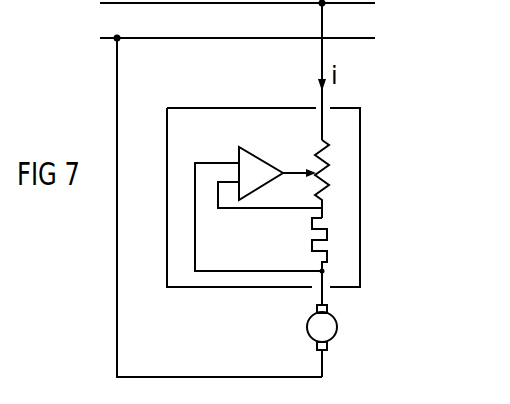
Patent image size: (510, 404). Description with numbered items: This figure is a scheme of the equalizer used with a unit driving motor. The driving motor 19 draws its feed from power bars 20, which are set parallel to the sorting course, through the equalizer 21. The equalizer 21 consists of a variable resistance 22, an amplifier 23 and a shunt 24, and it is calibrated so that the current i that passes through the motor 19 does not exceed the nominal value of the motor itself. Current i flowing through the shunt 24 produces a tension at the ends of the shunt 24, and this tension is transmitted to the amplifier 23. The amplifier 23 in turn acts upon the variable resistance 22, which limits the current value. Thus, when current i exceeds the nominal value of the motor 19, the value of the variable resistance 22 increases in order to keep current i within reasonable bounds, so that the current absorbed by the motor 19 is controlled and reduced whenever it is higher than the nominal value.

The driving motor 19 is at (337, 326).
The power bars 20 is at (377, 4).
The equalizer 21 is at (366, 197).
The variable resistance 22 is at (320, 142).
The amplifier 23 is at (240, 150).
The shunt 24 is at (312, 250).